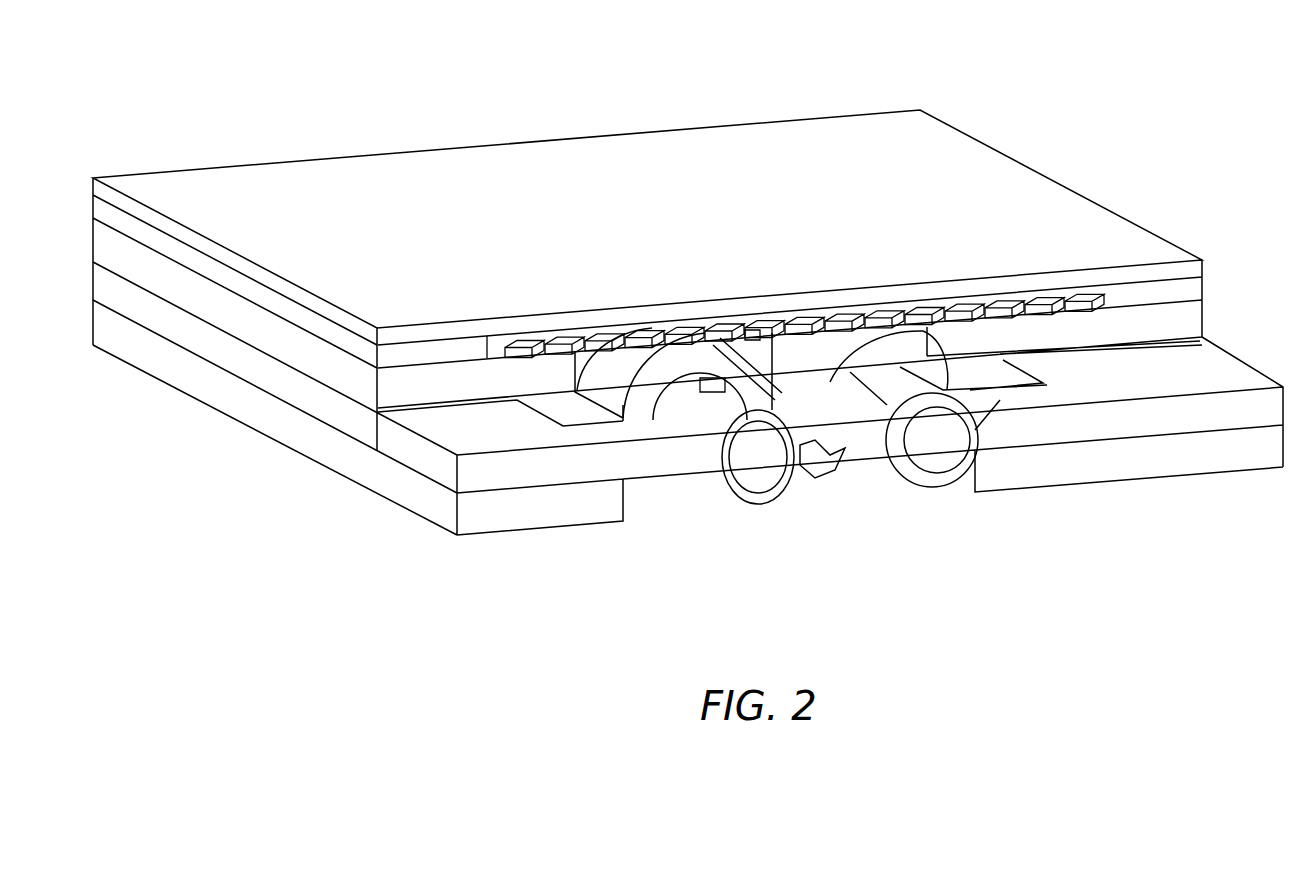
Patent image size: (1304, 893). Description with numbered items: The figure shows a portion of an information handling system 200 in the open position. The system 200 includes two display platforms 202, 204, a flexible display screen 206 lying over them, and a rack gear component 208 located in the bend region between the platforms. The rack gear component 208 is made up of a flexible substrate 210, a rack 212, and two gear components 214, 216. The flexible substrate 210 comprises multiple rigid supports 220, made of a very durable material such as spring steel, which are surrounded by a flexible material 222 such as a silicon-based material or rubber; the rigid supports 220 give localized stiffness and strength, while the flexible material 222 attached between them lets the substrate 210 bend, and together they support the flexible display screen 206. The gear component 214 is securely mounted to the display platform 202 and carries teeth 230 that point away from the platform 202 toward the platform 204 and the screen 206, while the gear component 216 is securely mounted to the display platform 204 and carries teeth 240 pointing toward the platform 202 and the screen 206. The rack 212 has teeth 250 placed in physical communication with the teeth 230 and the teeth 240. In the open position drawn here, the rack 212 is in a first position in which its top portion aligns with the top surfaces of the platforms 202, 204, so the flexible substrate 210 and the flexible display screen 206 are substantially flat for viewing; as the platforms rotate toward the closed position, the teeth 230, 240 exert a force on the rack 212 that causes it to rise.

The information handling system 200 is at (420, 88).
The display platform 202 is at (403, 388).
The display platform 204 is at (1187, 323).
The flexible display screen 206 is at (940, 140).
The rack gear component 208 is at (825, 515).
The flexible substrate 210 is at (357, 354).
The rack 212 is at (850, 425).
The gear component 214 is at (760, 475).
The gear component 216 is at (945, 460).
The rigid supports 220 is at (975, 300).
The flexible material 222 is at (905, 300).
The teeth 230 is at (713, 392).
The teeth 240 is at (925, 440).
The teeth 250 is at (757, 335).